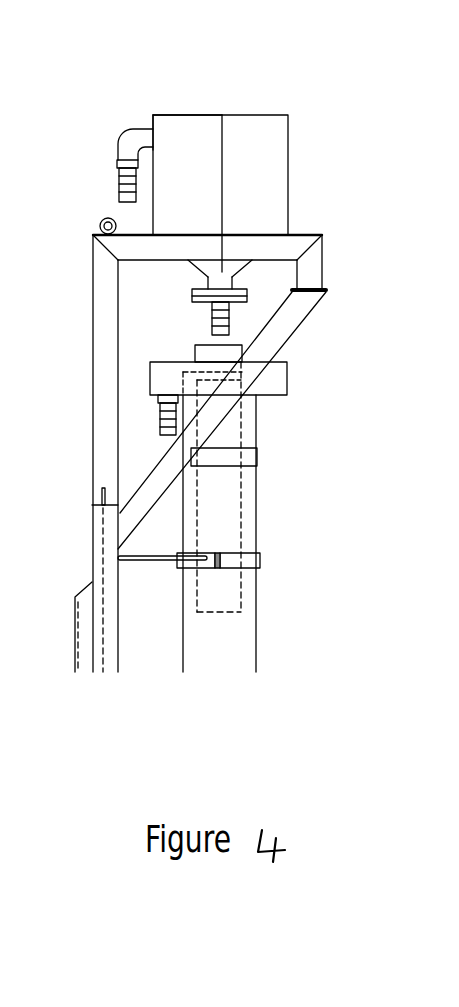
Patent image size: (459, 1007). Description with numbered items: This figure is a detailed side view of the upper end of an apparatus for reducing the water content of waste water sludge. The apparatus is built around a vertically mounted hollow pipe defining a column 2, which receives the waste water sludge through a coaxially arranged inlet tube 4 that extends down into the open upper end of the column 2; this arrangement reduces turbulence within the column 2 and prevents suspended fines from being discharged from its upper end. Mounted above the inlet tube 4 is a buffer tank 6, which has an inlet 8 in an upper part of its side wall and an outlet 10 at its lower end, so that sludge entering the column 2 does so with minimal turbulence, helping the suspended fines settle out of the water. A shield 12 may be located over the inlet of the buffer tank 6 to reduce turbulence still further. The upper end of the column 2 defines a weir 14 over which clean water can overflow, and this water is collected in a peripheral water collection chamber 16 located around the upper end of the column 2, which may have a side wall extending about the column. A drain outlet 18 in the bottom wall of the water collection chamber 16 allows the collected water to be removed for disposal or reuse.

The column 2 is at (257, 640).
The inlet tube 4 is at (228, 497).
The buffer tank 6 is at (280, 157).
The inlet 8 is at (143, 137).
The outlet 10 is at (230, 312).
The shield 12 is at (178, 135).
The weir 14 is at (190, 365).
The water collection chamber 16 is at (283, 380).
The drain outlet 18 is at (158, 425).